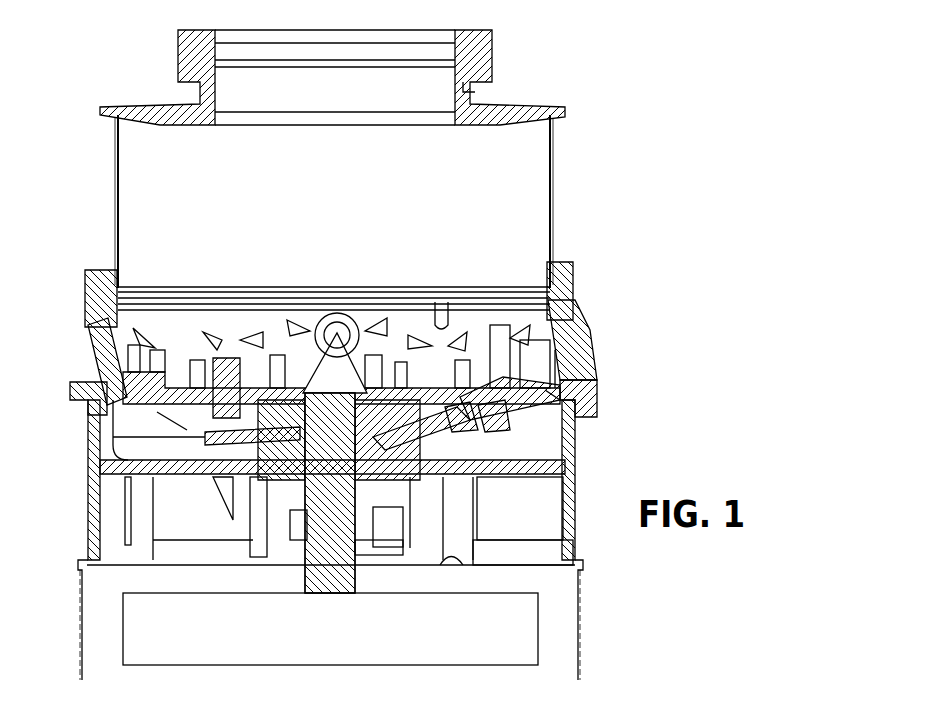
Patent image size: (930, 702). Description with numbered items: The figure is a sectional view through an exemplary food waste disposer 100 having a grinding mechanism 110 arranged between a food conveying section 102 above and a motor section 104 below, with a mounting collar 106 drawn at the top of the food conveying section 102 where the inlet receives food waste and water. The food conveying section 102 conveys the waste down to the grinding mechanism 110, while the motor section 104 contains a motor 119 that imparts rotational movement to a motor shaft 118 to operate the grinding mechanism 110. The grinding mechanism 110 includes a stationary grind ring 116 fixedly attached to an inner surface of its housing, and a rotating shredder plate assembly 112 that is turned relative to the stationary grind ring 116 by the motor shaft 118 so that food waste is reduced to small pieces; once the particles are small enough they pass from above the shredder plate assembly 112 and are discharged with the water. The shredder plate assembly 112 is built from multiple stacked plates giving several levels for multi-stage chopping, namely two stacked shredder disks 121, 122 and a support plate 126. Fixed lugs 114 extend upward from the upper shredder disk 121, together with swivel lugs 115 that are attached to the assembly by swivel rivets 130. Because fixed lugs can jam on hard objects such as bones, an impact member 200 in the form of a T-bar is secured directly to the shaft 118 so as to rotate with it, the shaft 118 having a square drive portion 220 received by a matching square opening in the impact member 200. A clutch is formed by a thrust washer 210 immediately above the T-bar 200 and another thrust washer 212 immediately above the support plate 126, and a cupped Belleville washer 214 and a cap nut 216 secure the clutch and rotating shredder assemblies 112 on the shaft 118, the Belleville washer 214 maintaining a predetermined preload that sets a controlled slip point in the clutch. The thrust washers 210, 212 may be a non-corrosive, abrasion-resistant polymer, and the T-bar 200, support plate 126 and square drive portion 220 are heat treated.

The food waste disposer 100 is at (692, 198).
The food conveying section 102 is at (136, 160).
The motor section 104 is at (110, 613).
The sink flange / mounting collar 106 is at (195, 58).
The grinding mechanism 110 is at (552, 315).
The rotating shredder plate assembly 112 is at (85, 375).
The fixed lugs 114 is at (262, 357).
The swivel lugs 115 is at (549, 286).
The stationary grind ring 116 is at (505, 386).
The motor shaft 118 is at (310, 570).
The motor 119 is at (540, 598).
The upper shredder disk 121 is at (103, 378).
The lower shredder disk 122 is at (105, 428).
The support plate 126 is at (580, 387).
The swivel rivets 130 is at (440, 370).
The impact member 200 is at (503, 418).
The thrust washer 210 is at (548, 393).
The thrust washer 212 is at (568, 347).
The Belleville washer 214 is at (527, 340).
The cap nut 216 is at (385, 352).
The square drive portion 220 is at (245, 455).